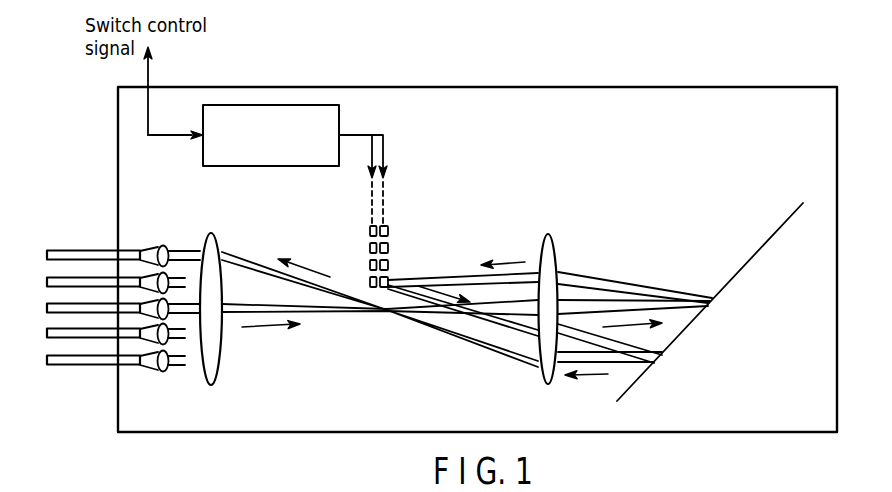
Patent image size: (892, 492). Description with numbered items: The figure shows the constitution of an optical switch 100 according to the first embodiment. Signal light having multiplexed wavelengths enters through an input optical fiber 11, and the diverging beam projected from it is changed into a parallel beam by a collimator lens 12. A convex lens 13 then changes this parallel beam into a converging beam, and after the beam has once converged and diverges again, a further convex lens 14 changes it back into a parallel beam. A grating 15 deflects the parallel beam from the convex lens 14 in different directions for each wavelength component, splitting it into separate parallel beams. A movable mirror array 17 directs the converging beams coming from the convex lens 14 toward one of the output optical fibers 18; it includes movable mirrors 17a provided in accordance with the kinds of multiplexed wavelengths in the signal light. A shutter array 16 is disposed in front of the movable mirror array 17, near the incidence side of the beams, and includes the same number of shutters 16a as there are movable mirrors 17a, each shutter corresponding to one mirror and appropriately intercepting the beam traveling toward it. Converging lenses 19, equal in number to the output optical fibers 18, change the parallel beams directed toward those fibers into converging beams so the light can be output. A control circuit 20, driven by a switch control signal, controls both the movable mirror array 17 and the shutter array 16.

The optical switch 100 is at (661, 97).
The control circuit 20 is at (297, 103).
The input optical fiber 11 is at (81, 309).
The output optical fibers 18 is at (65, 282).
The converging lenses 19 is at (167, 250).
The collimator lens 12 is at (222, 345).
The convex lens 13 is at (218, 373).
The movable mirror array 17 is at (328, 234).
The movable mirrors 17a is at (367, 243).
The shutter array 16 is at (430, 234).
The shutters 16a is at (389, 241).
The convex lens 14 is at (542, 372).
The grating 15 is at (636, 381).